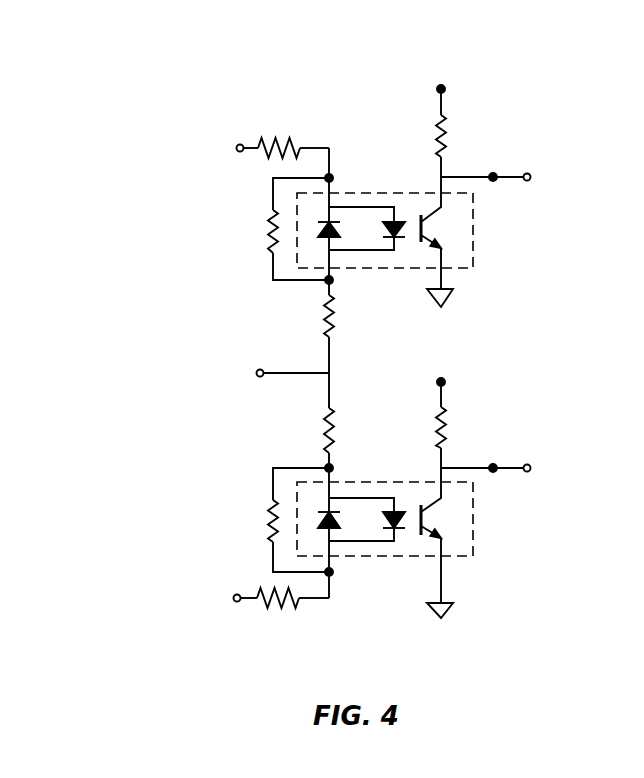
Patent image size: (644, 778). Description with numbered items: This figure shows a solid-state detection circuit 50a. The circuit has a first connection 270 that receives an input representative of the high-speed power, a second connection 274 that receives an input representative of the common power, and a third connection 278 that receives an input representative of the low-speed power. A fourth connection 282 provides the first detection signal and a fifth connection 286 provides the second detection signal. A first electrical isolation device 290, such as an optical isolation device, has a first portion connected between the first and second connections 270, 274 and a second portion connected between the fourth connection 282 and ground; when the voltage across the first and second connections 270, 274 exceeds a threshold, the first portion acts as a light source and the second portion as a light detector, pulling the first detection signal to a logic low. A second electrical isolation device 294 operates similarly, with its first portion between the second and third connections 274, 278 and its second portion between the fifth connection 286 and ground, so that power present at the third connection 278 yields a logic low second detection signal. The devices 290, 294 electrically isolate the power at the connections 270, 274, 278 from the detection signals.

The signal detection circuit 50a is at (148, 73).
The first connection 270 is at (236, 148).
The second connection 274 is at (256, 372).
The third connection 278 is at (233, 597).
The fourth connection 282 is at (531, 175).
The fifth connection 286 is at (531, 466).
The first electrical isolation device 290 is at (476, 245).
The second electrical isolation device 294 is at (476, 531).